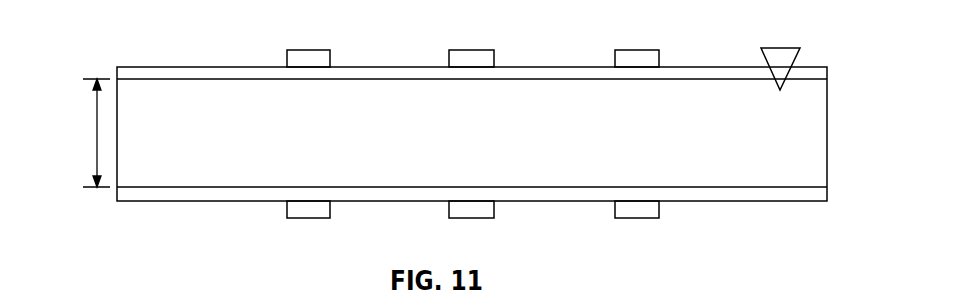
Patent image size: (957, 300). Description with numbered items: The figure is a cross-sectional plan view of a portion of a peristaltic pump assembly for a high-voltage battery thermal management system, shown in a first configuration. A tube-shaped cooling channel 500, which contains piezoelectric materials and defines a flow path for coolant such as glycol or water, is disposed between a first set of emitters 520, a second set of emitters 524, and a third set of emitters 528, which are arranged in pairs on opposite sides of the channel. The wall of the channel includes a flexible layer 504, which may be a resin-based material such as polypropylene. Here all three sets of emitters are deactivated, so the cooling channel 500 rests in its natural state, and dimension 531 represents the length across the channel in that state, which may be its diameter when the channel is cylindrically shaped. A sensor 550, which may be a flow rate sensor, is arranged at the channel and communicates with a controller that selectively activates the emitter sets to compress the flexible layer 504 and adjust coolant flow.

The cooling channel 500 is at (128, 41).
The flexible layer 504 is at (162, 67).
The dimension 531 is at (96, 146).
The first set of emitters 520 is at (308, 50).
The second set of emitters 524 is at (471, 50).
The third set of emitters 528 is at (637, 50).
The sensor 550 is at (800, 55).